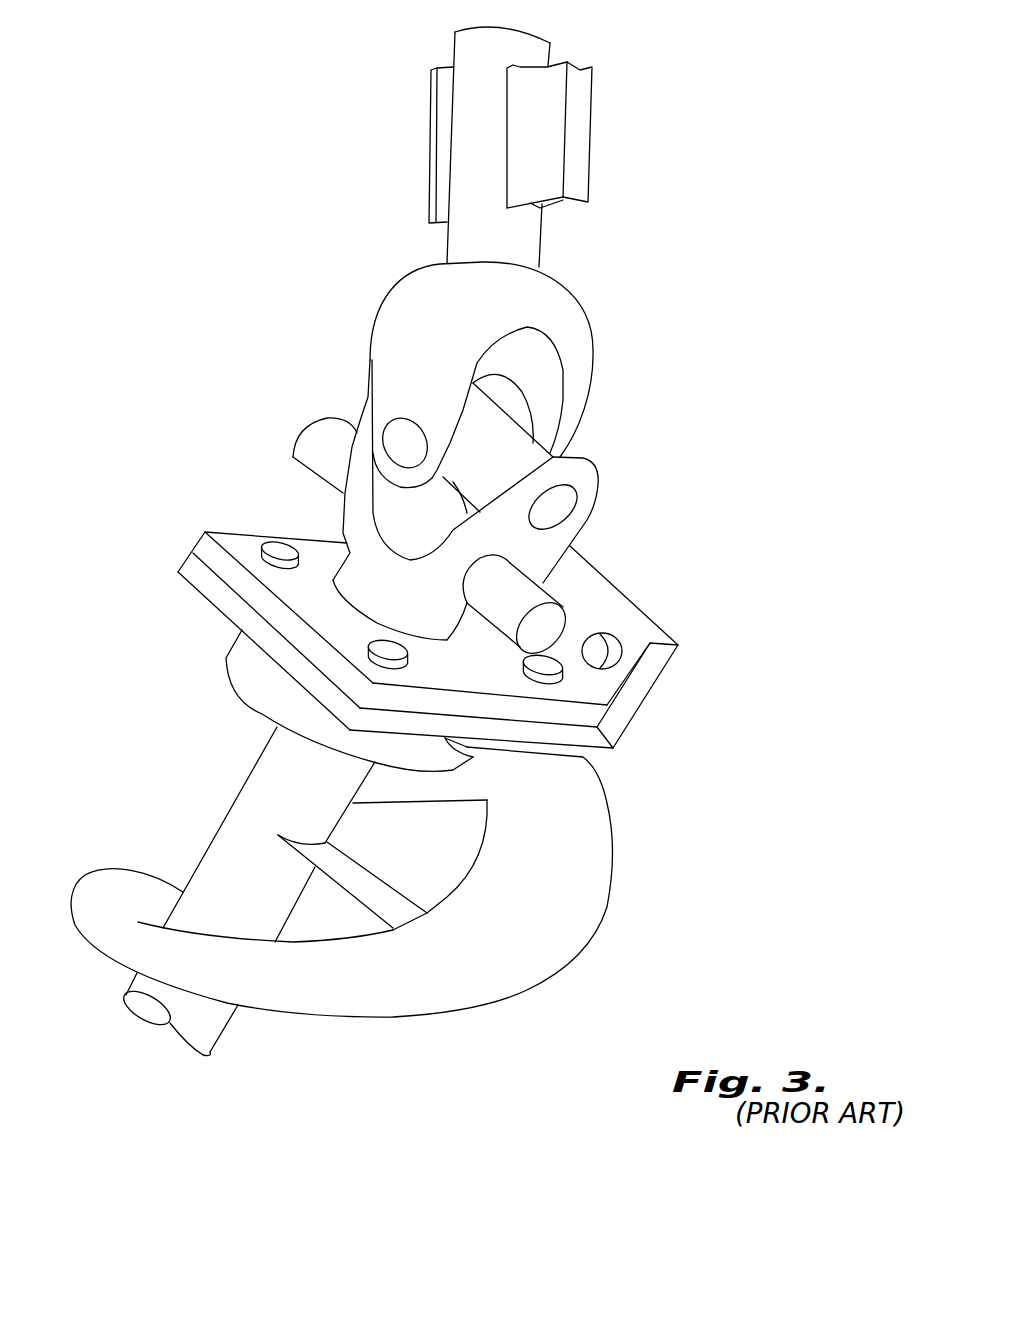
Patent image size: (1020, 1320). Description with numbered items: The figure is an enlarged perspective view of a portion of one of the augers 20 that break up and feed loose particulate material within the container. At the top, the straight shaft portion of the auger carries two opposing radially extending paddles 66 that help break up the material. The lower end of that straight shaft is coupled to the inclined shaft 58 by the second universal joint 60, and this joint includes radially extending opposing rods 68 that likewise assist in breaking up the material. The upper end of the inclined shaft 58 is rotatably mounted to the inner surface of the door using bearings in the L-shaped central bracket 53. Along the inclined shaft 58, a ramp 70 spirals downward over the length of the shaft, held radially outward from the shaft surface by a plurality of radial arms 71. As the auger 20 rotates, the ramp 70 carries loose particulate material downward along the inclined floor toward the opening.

The auger 20 is at (212, 229).
The central bracket 53 is at (620, 716).
The inclined shaft 58 is at (618, 870).
The second universal joint 60 is at (610, 403).
The paddles 66 is at (434, 157).
The rods 68 is at (312, 437).
The ramp 70 is at (424, 982).
The radial arms 71 is at (340, 868).